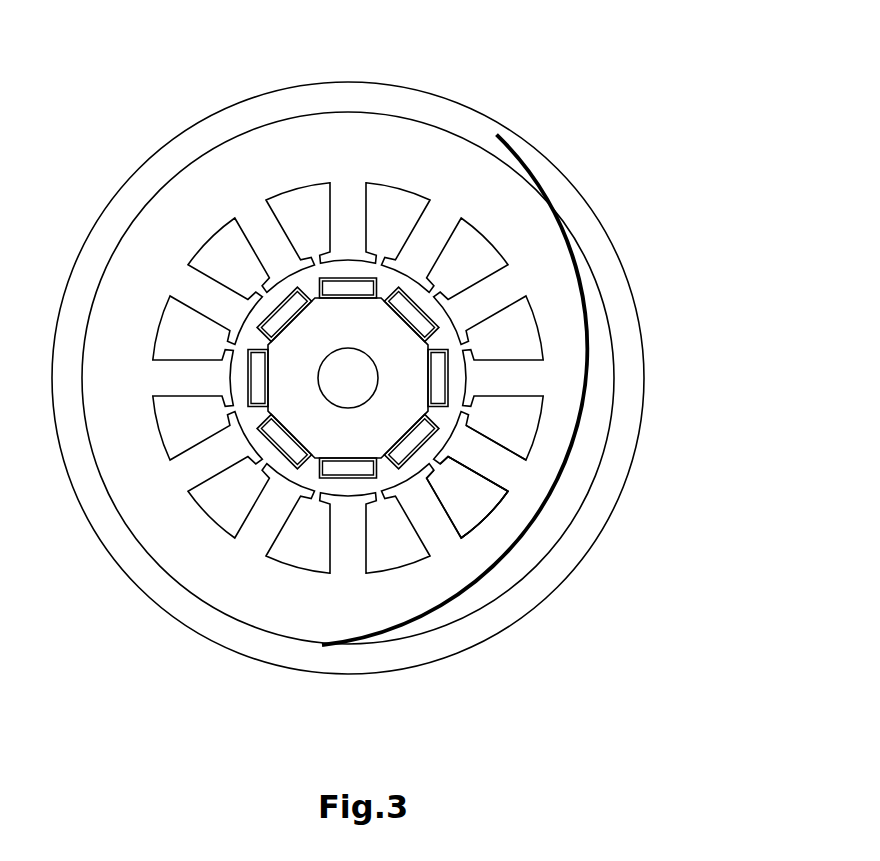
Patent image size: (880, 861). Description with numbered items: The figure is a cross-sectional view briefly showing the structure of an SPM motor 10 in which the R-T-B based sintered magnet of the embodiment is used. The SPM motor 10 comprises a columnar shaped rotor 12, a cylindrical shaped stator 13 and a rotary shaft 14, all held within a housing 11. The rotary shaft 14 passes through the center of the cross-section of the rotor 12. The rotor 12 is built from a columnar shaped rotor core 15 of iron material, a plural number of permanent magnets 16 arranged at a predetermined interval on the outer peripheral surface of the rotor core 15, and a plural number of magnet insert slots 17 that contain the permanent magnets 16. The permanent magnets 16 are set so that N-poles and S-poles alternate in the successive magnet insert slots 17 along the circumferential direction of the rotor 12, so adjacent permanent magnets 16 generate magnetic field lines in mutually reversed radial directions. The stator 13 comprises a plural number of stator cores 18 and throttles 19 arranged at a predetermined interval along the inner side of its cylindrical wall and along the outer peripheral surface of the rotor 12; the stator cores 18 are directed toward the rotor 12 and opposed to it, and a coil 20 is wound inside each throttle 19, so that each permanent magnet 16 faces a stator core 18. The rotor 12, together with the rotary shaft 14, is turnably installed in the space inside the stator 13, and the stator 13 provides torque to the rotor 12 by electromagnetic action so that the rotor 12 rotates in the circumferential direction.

The SPM motor 10 is at (403, 358).
The housing 11 is at (548, 187).
The rotor 12 is at (501, 378).
The stator 13 is at (441, 395).
The rotary shaft 14 is at (355, 390).
The rotor core 15 is at (410, 373).
The permanent magnet 16 is at (440, 378).
The magnet insert slot 17 is at (447, 389).
The stator core 18 is at (507, 471).
The throttle 19 is at (492, 505).
The coil 20 is at (475, 522).